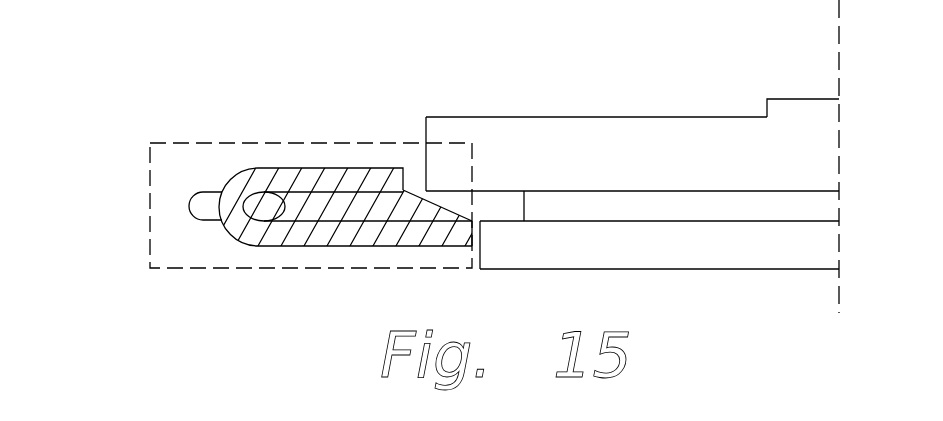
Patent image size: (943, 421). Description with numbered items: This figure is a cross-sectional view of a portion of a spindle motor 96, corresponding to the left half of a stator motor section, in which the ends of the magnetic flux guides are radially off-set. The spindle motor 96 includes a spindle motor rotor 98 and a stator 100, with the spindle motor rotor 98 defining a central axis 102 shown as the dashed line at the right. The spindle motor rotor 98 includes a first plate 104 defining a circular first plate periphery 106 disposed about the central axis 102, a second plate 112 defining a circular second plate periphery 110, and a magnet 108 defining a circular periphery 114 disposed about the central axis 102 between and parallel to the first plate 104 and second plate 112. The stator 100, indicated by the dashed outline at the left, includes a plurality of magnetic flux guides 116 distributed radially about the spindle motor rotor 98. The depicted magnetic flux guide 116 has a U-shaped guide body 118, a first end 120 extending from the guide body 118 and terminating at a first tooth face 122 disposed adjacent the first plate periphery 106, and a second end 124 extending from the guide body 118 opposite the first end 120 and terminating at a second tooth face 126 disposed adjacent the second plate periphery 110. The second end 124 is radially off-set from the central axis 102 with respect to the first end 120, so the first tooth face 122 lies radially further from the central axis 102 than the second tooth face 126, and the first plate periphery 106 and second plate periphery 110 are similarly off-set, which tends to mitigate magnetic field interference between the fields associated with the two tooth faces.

The spindle motor 96 is at (139, 60).
The spindle motor rotor 98 is at (737, 170).
The stator 100 is at (167, 150).
The central axis 102 is at (828, 60).
The first plate 104 is at (637, 166).
The first plate periphery 106 is at (433, 152).
The magnet 108 is at (680, 215).
The second plate periphery 110 is at (490, 267).
The second plate 112 is at (759, 259).
The circular periphery 114 is at (536, 213).
The magnetic flux guide 116 is at (290, 173).
The U-shaped guide body 118 is at (235, 227).
The first end 120 is at (358, 180).
The first tooth face 122 is at (379, 168).
The second end 124 is at (363, 233).
The second tooth face 126 is at (461, 234).